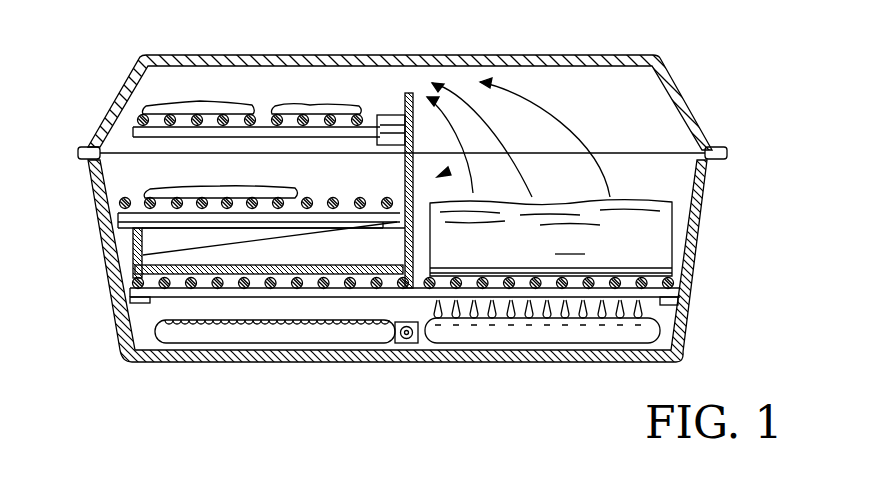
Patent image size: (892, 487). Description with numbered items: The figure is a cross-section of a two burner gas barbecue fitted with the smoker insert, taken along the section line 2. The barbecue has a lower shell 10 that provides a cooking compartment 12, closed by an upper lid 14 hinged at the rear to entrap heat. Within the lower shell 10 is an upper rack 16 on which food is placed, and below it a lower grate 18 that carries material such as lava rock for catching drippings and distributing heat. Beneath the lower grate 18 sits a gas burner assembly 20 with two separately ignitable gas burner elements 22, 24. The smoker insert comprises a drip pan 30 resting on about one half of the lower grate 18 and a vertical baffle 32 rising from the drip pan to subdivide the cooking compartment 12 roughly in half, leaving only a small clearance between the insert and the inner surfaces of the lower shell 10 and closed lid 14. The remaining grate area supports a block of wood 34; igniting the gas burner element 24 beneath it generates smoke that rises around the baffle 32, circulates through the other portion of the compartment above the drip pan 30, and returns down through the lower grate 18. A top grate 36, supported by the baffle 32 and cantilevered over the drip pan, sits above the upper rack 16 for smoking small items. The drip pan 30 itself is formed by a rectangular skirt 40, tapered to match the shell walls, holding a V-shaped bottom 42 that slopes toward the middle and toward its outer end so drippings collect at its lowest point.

The section line 2- 2 is at (143, 0).
The lower shell 10 is at (697, 263).
The cooking compartment 12 is at (437, 177).
The upper lid 14 is at (700, 117).
The upper rack 16 is at (117, 203).
The lower grate 18 is at (127, 333).
The gas burner assembly 20 is at (368, 343).
The gas burner element 22 is at (247, 333).
The gas burner element 24 is at (580, 333).
The drip pan 30 is at (125, 250).
The vertical baffle 32 is at (418, 127).
The block of wood 34 is at (551, 238).
The top grate 36 is at (350, 125).
The rectangular skirt 40 is at (132, 280).
The V-shaped bottom 42 is at (318, 234).